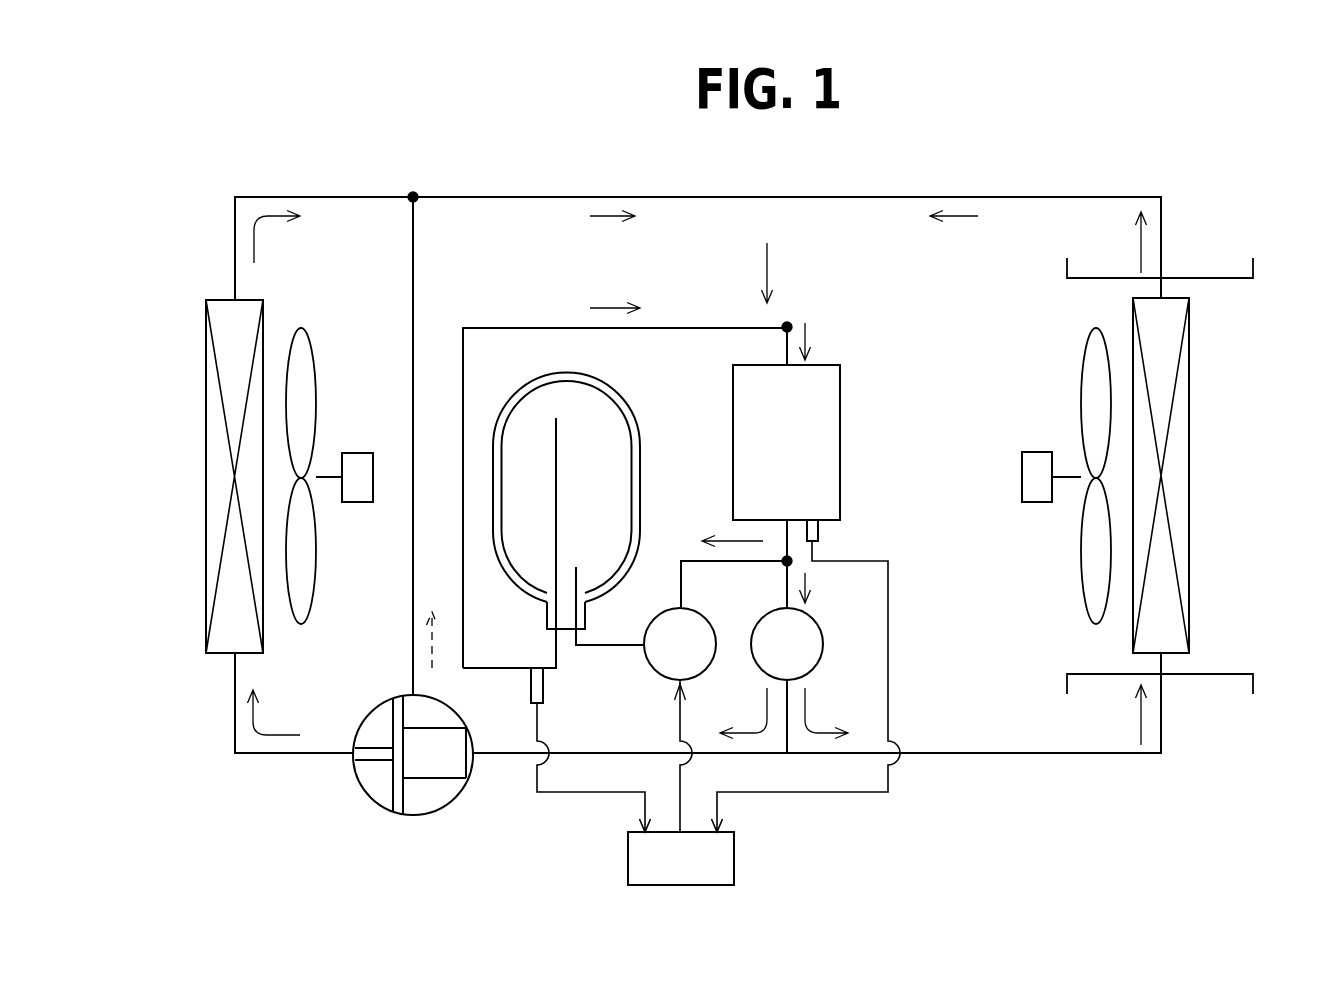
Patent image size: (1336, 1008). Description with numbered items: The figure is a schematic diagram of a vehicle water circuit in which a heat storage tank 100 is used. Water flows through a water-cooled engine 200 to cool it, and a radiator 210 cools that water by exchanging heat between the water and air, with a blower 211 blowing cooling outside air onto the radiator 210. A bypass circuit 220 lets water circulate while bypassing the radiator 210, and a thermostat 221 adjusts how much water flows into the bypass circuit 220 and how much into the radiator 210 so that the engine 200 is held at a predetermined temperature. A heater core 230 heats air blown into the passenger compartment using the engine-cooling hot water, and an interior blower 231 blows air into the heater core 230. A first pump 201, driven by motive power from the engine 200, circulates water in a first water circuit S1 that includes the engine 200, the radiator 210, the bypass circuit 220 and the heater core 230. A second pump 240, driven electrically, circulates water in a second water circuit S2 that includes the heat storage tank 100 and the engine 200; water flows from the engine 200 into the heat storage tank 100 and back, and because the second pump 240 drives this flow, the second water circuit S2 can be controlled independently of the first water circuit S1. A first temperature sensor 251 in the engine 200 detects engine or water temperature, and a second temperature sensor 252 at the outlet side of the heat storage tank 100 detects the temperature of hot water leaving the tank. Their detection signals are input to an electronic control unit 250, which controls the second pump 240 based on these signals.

The first water circuit S1 is at (684, 197).
The second water circuit S2 is at (676, 327).
The heat storage tank 100 is at (643, 378).
The water-cooled engine 200 is at (842, 428).
The first pump 201 is at (820, 625).
The radiator 210 is at (208, 300).
The blower 211 is at (370, 424).
The bypass circuit 220 is at (414, 268).
The thermostat 221 is at (456, 802).
The heater core 230 is at (1191, 508).
The blower 231 is at (1038, 441).
The second pump 240 is at (722, 604).
The electronic control unit 250 is at (735, 858).
The first temperature sensor 251 is at (822, 532).
The second temperature sensor 252 is at (545, 686).